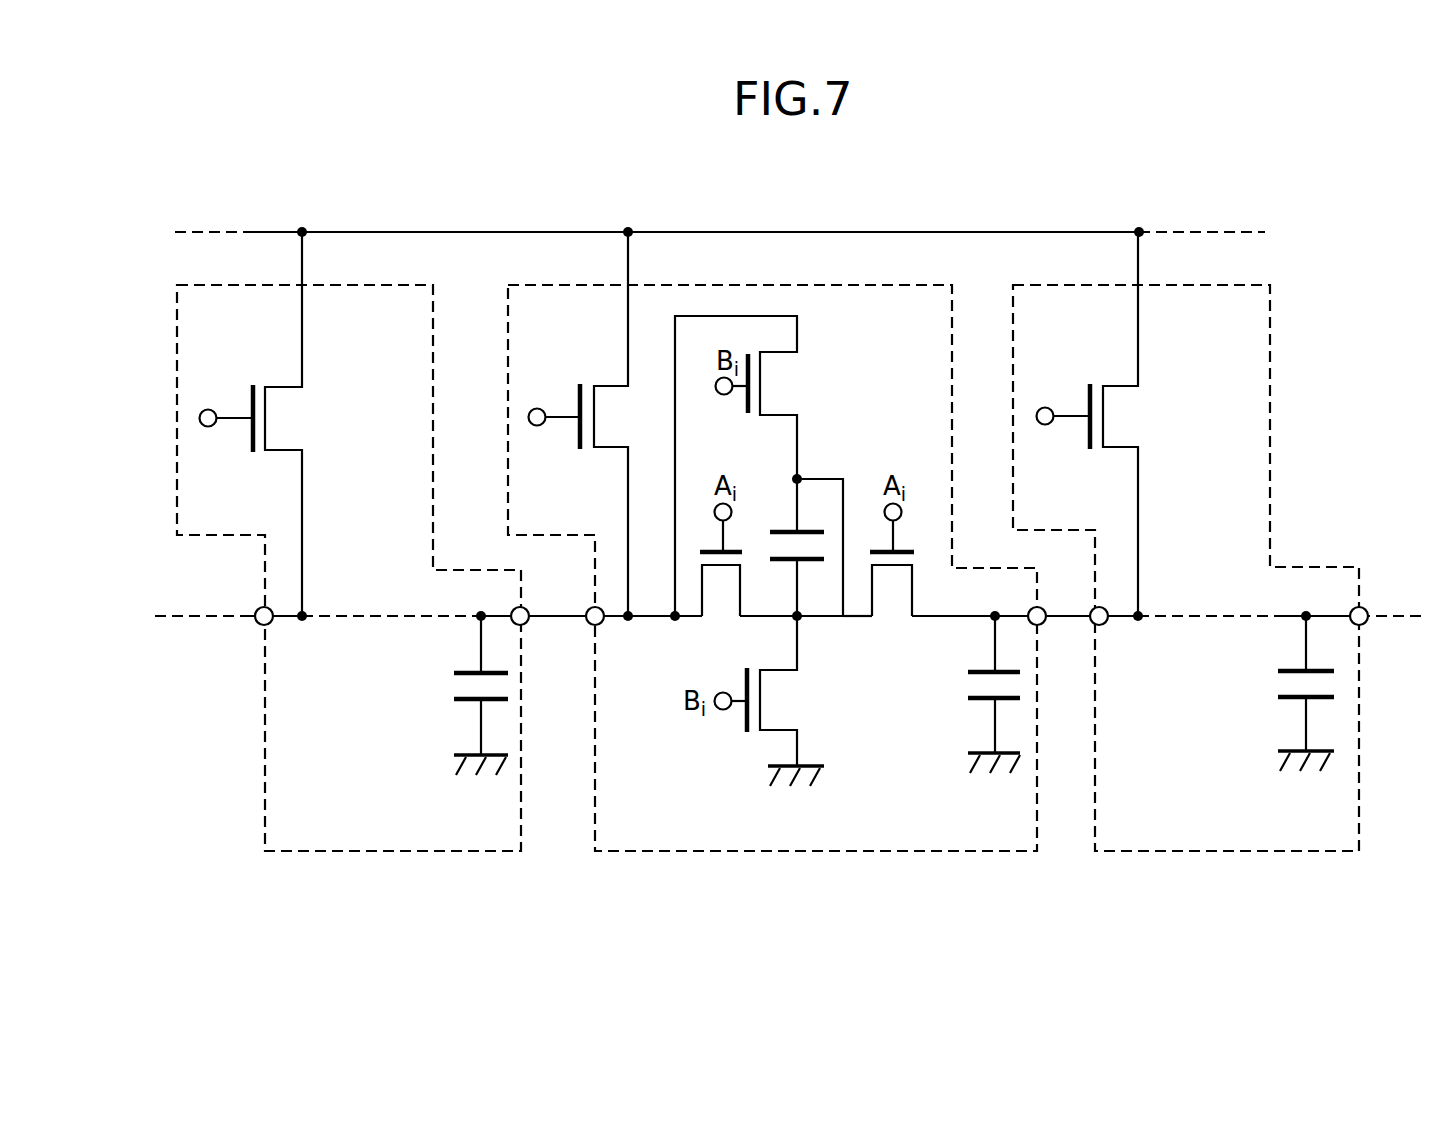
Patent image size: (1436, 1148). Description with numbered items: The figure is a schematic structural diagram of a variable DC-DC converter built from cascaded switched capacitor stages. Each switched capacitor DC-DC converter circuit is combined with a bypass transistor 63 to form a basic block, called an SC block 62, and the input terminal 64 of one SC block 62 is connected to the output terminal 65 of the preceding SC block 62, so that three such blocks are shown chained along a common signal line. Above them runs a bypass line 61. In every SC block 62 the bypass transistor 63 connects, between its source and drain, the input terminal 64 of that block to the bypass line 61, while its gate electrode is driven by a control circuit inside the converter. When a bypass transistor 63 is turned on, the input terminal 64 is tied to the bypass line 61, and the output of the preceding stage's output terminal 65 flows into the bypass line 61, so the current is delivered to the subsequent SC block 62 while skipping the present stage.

The bypass line 61 is at (775, 230).
The basic block (SC block) 62 is at (281, 855).
The bypass transistor 63 is at (292, 417).
The input terminal 64 is at (264, 626).
The output terminal 65 is at (521, 626).